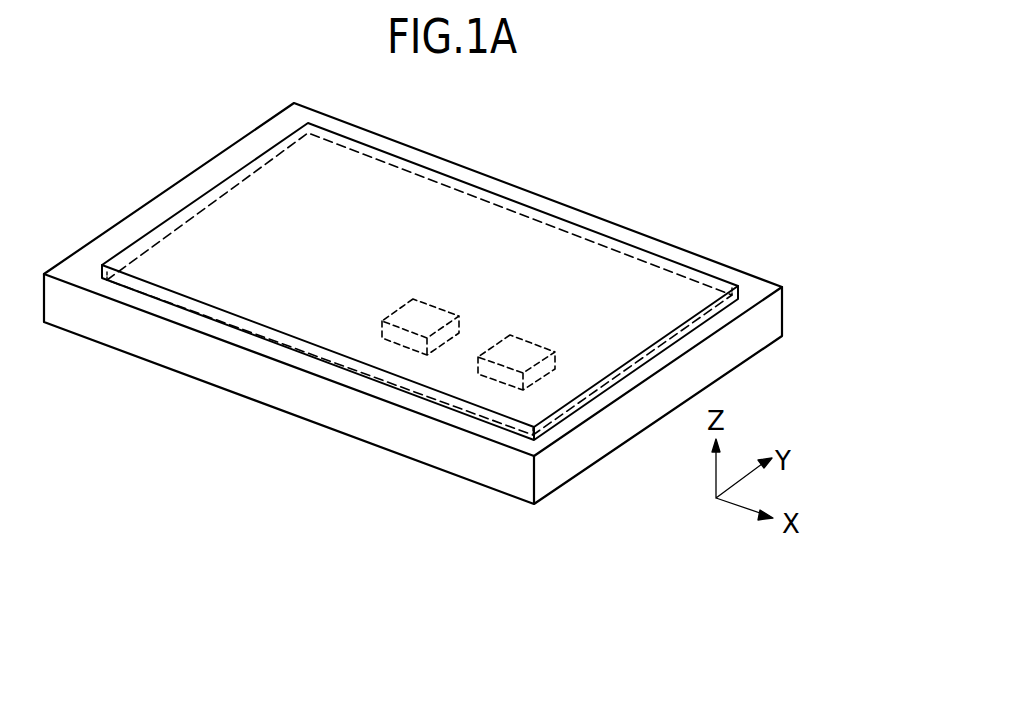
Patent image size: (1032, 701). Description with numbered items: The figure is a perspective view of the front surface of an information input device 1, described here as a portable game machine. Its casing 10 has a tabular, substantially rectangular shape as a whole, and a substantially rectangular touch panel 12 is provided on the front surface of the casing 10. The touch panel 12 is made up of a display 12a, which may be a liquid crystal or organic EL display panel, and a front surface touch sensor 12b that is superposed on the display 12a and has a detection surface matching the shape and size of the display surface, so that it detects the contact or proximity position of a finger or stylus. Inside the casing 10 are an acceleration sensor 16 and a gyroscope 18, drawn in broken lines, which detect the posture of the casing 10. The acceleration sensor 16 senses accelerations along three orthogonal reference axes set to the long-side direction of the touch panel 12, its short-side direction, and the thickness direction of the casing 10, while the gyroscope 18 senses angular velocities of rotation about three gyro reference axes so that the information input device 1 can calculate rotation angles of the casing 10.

The information input device 1 is at (479, 373).
The casing 10 is at (372, 445).
The touch panel 12 is at (508, 281).
The display 12a is at (733, 305).
The front surface touch sensor 12b is at (727, 281).
The acceleration sensor 16 is at (537, 342).
The gyroscope 18 is at (440, 307).